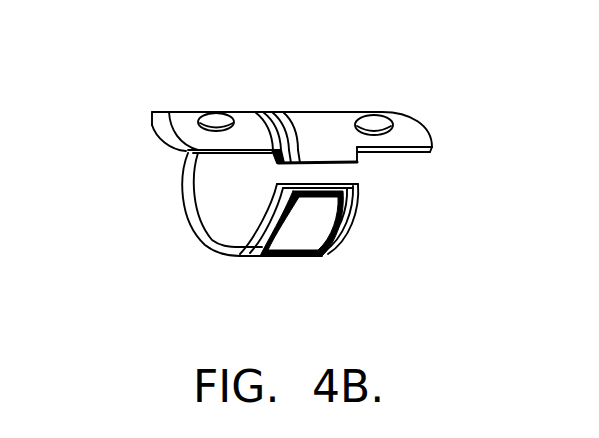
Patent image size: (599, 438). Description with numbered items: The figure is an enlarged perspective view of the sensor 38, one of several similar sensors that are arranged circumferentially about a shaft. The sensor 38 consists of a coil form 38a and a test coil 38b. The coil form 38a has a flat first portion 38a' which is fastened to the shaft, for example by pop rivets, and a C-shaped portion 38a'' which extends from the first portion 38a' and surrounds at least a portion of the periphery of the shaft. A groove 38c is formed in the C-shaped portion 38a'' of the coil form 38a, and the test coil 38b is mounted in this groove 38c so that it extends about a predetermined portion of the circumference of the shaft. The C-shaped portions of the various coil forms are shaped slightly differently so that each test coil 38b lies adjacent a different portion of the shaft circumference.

The sensor 38 is at (288, 187).
The coil form 38a is at (192, 184).
The first portion of coil form 38a' is at (374, 92).
The C-shaped portion of coil form 38a'' is at (185, 250).
The test coil 38b is at (327, 239).
The groove 38c is at (347, 194).